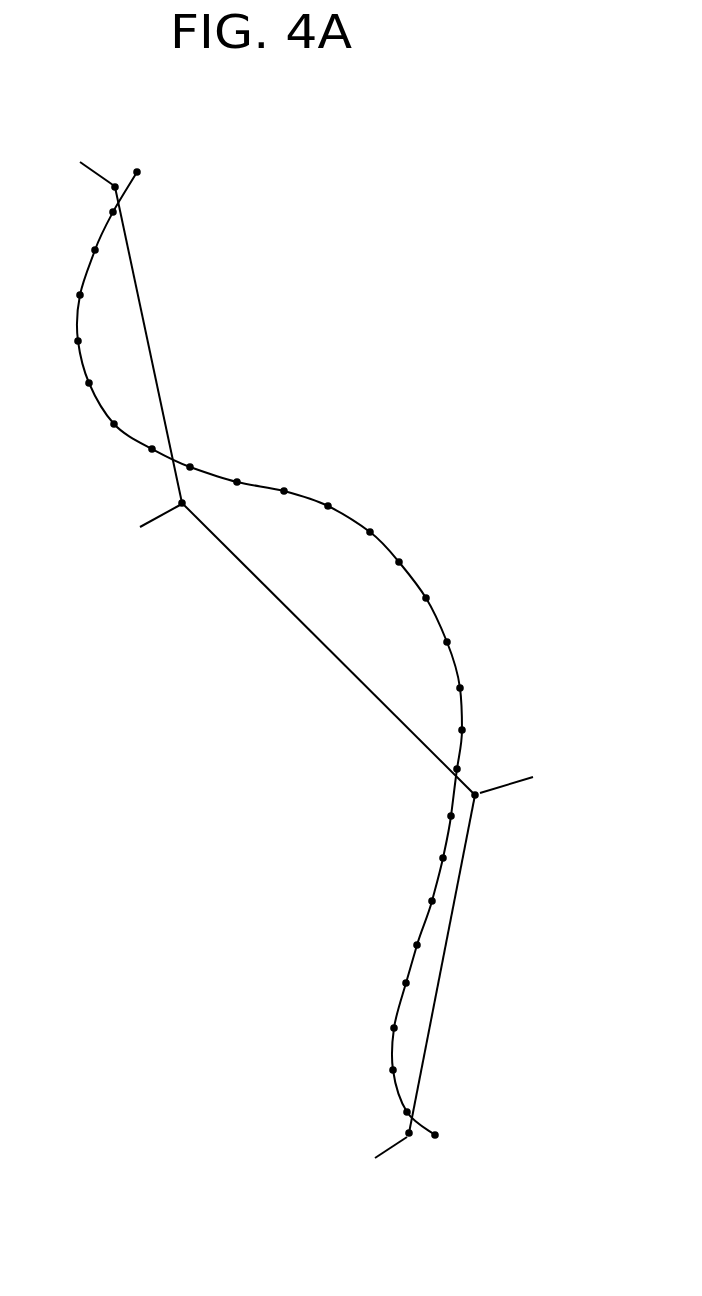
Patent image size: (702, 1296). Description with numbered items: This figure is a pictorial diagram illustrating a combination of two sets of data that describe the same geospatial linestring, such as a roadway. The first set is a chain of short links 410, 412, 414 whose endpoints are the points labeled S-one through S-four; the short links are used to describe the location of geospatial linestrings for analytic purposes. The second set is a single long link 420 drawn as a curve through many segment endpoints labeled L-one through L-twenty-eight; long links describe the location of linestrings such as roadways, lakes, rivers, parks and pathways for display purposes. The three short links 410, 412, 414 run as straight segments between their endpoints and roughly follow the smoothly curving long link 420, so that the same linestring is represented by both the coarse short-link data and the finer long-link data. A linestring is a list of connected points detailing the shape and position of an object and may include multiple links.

The short link 410 is at (153, 367).
The short link 412 is at (292, 612).
The short link 414 is at (437, 1005).
The long link 420 is at (413, 573).